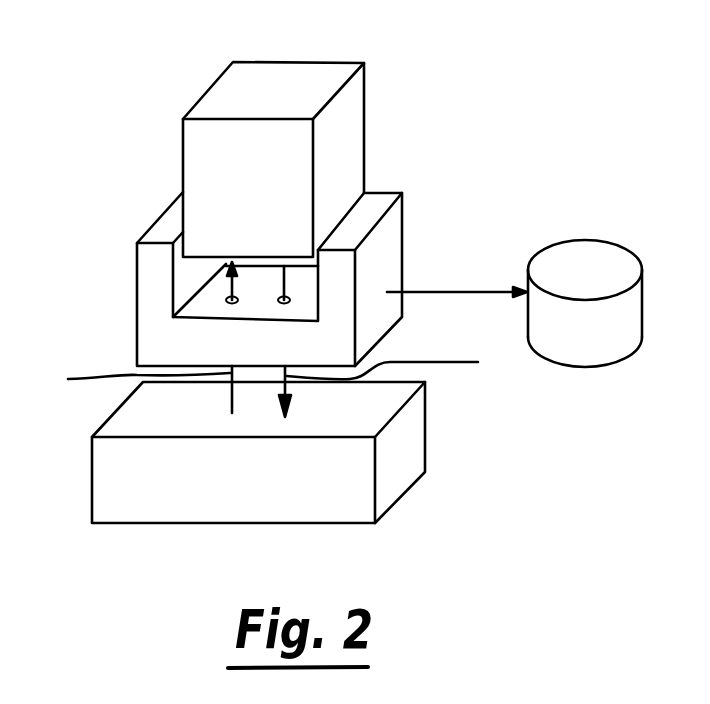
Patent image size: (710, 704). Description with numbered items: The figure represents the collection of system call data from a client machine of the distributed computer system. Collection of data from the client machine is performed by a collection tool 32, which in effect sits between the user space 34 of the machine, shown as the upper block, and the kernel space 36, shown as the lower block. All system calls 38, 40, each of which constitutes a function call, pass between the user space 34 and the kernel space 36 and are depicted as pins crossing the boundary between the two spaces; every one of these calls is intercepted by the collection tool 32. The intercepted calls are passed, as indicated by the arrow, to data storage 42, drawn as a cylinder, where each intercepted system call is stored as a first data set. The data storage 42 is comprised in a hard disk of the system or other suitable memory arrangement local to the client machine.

The collection tool 32 is at (148, 282).
The user space 34 is at (352, 152).
The kernel space 36 is at (400, 468).
The system call 38 is at (131, 378).
The system call 40 is at (403, 367).
The data storage 42 is at (600, 257).